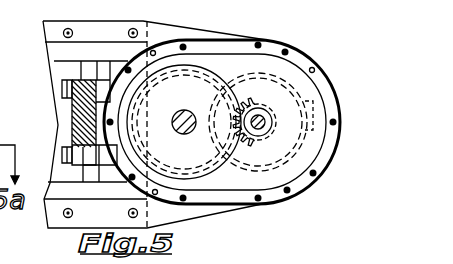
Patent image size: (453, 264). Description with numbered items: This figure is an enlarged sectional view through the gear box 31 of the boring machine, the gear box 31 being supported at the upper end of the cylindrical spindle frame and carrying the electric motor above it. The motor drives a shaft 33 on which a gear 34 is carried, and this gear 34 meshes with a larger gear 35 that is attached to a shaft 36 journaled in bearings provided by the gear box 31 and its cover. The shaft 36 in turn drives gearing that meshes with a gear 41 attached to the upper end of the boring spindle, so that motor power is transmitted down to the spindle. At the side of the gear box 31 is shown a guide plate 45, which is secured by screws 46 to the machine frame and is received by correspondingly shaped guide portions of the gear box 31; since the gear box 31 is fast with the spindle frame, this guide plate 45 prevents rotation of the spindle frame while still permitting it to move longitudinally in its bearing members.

The gear box 31 is at (328, 148).
The shaft 33 is at (266, 118).
The gear 34 is at (272, 142).
The gear 35 is at (212, 152).
The shaft 36 is at (186, 131).
The gear 41 is at (310, 110).
The guide plate 45 is at (74, 141).
The screws 46 is at (63, 90).